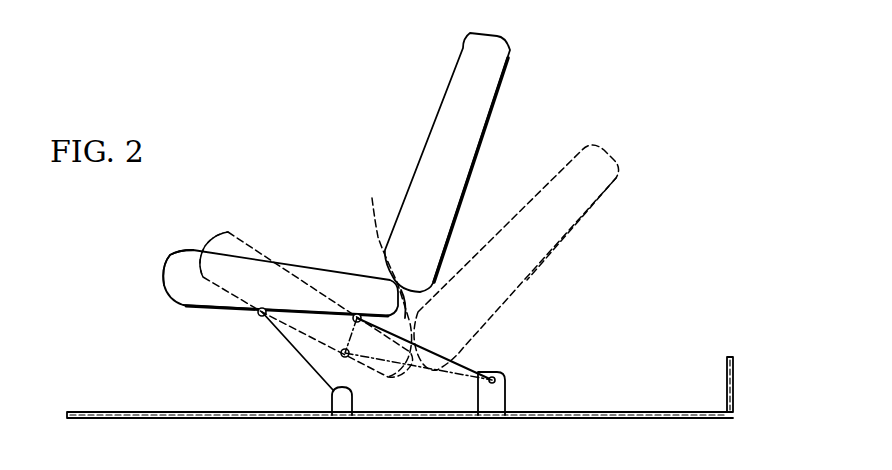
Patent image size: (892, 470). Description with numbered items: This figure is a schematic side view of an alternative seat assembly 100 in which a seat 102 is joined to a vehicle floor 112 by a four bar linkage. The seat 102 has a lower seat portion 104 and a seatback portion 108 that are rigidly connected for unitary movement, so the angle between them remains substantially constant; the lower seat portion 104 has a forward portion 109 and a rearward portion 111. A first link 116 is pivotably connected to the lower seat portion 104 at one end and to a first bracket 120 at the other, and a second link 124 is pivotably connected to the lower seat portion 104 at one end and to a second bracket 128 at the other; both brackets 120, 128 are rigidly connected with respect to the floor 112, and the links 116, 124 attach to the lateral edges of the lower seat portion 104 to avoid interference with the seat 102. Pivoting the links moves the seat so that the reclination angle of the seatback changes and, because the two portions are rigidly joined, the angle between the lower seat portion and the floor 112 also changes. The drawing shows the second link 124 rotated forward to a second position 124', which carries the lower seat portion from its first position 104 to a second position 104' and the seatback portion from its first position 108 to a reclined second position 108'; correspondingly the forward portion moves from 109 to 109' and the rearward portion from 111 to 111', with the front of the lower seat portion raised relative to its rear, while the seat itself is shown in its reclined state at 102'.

The seat assembly 100 is at (268, 97).
The seat 102 is at (447, 162).
The lower seat portion 104 is at (247, 283).
The seatback portion 108 is at (503, 170).
The forward portion 109 is at (153, 247).
The rearward portion 111 is at (365, 268).
The vehicle floor 112 is at (643, 413).
The first link 116 is at (290, 347).
The first bracket 120 is at (330, 407).
The second link 124 is at (447, 349).
The second bracket 128 is at (508, 393).
The seat back in reclined position 102' is at (541, 257).
The lower seat portion in second position 104' is at (306, 278).
The seatback portion in second position 108' is at (604, 202).
The forward portion in second position 109' is at (258, 233).
The rearward portion in second position 111' is at (383, 278).
The second link in second position 124' is at (418, 362).